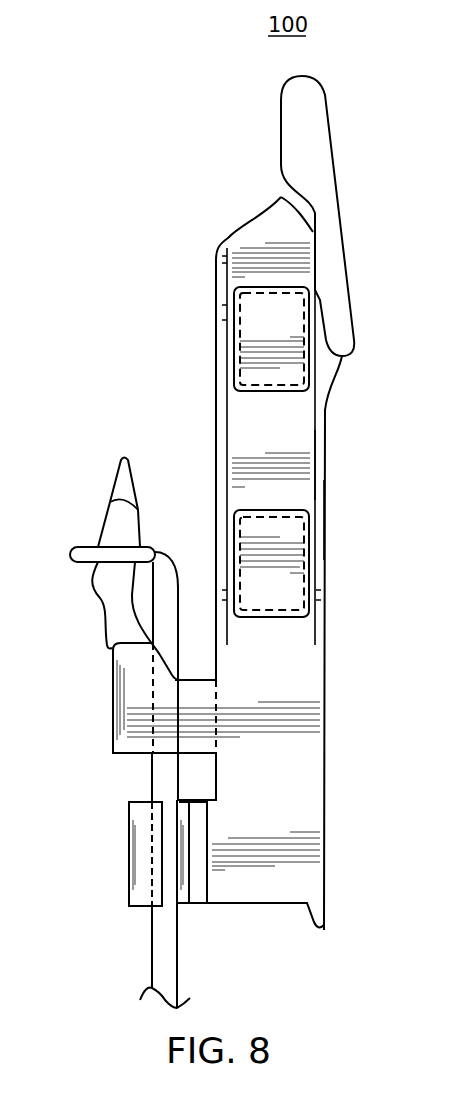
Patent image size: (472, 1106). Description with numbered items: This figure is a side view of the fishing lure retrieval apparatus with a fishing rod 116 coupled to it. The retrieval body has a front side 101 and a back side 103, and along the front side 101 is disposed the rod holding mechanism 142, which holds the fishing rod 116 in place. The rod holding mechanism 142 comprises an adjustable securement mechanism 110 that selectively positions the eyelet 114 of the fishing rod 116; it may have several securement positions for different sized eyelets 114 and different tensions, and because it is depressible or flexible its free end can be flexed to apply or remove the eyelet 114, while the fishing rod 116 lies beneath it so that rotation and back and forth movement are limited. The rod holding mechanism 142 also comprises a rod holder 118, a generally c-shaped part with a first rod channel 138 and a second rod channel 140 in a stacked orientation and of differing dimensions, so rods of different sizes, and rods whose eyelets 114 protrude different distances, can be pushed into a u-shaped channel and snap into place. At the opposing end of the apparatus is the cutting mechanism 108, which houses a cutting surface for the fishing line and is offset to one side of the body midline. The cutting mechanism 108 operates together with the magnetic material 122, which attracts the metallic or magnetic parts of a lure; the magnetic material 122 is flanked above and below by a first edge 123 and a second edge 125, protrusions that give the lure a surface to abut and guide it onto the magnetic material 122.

The cutting mechanism 108 is at (365, 180).
The front side 101 is at (216, 438).
The first edge 123 is at (227, 347).
The magnetic material 122 is at (304, 378).
The second edge 125 is at (318, 470).
The back side 103 is at (325, 517).
The adjustable securement mechanism 110 is at (90, 595).
The eyelet 114 is at (70, 555).
The rod holding mechanism 142 is at (114, 804).
The rod holder 118 is at (129, 853).
The first rod channel 138 is at (150, 883).
The second rod channel 140 is at (197, 895).
The fishing rod 116 is at (152, 955).